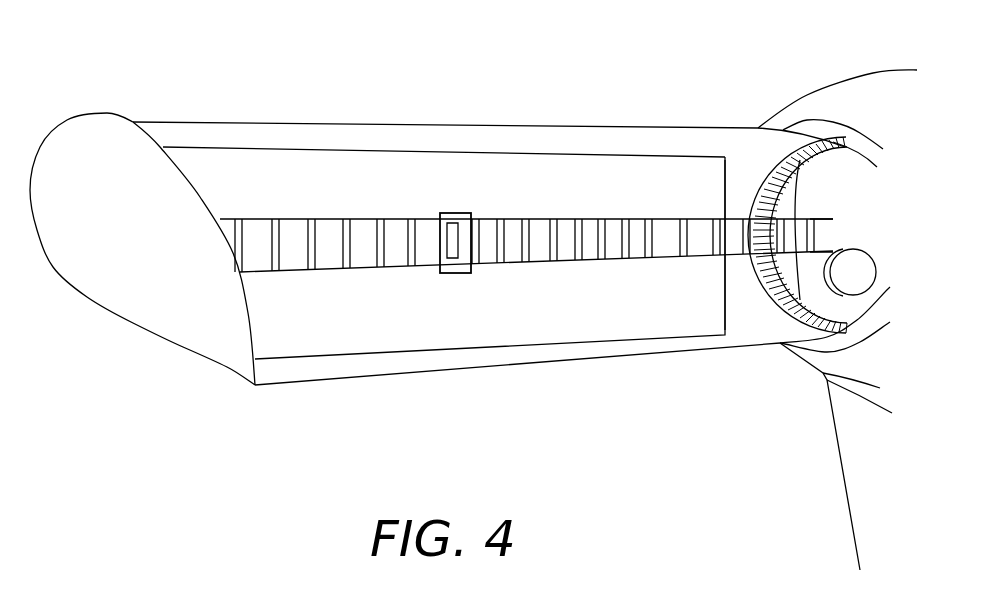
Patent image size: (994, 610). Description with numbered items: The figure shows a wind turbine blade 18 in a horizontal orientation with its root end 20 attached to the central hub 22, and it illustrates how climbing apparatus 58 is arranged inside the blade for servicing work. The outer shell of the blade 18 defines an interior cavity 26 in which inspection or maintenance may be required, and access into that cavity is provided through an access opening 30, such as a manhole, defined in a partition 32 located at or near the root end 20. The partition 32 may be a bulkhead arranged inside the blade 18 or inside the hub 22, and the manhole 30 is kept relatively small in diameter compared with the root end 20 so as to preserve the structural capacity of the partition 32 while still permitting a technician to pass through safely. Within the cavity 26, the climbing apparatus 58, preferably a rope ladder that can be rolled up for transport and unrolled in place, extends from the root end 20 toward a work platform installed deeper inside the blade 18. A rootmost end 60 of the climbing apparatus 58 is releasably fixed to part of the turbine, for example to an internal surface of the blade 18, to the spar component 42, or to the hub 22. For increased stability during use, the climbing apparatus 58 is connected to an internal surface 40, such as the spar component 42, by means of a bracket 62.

The wind turbine blade 18 is at (290, 105).
The spar component 42 is at (530, 167).
The internal surface 40 is at (423, 317).
The climbing apparatus 58 is at (346, 207).
The bracket 62 is at (465, 274).
The root end 20 is at (783, 153).
The interior cavity 26 is at (758, 189).
The rootmost end 60 is at (817, 210).
The partition 32 is at (855, 191).
The access opening 30 is at (856, 272).
The central hub 22 is at (833, 98).